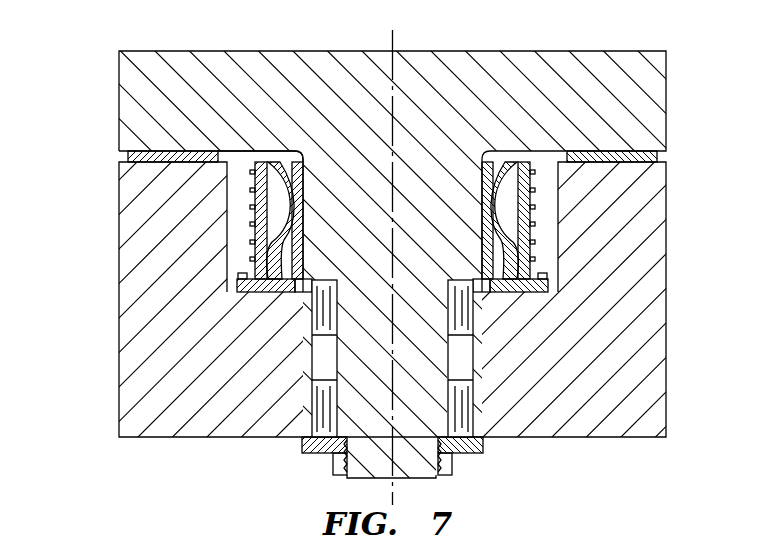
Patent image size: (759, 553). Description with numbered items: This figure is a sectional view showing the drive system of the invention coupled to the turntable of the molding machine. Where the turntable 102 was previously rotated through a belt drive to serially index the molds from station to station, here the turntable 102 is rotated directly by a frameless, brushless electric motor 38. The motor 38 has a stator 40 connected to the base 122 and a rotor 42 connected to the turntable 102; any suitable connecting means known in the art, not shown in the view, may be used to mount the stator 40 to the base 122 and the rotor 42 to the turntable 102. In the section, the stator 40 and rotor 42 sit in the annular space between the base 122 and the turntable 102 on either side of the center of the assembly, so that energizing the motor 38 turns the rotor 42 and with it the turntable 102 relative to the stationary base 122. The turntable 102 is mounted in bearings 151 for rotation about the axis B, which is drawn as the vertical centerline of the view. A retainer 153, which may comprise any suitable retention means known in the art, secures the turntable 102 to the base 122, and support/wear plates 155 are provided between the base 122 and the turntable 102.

The frameless, brushless electric motor 38 is at (263, 143).
The stator 40 is at (272, 240).
The rotor 42 is at (300, 200).
The turntable 102 is at (517, 88).
The base 122 is at (213, 420).
The bearings 151 is at (463, 407).
The retainer 153 is at (460, 452).
The support/wear plates 155 is at (130, 154).
The axis B is at (393, 32).